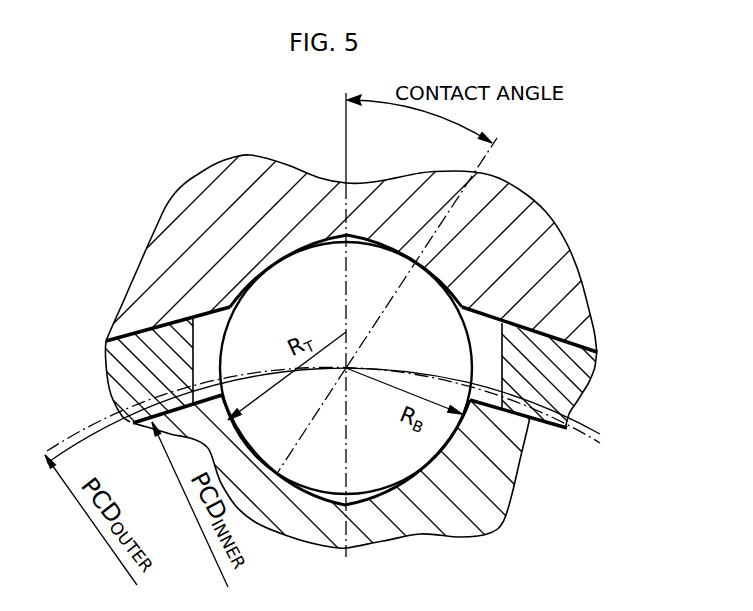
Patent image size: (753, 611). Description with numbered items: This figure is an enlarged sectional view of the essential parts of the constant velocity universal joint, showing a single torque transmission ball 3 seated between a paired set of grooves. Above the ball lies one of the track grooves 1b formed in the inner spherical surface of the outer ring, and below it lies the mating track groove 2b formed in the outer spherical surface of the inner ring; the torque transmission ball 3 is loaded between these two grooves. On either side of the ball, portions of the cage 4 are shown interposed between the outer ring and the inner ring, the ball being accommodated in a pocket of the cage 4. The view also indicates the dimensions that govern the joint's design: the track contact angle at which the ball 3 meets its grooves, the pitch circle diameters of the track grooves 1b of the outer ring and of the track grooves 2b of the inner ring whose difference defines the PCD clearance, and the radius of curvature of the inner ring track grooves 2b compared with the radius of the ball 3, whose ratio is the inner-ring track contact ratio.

The track grooves 1b is at (256, 275).
The track grooves 2b is at (384, 484).
The torque transmission balls 3 is at (428, 310).
The cage 4 is at (563, 378).